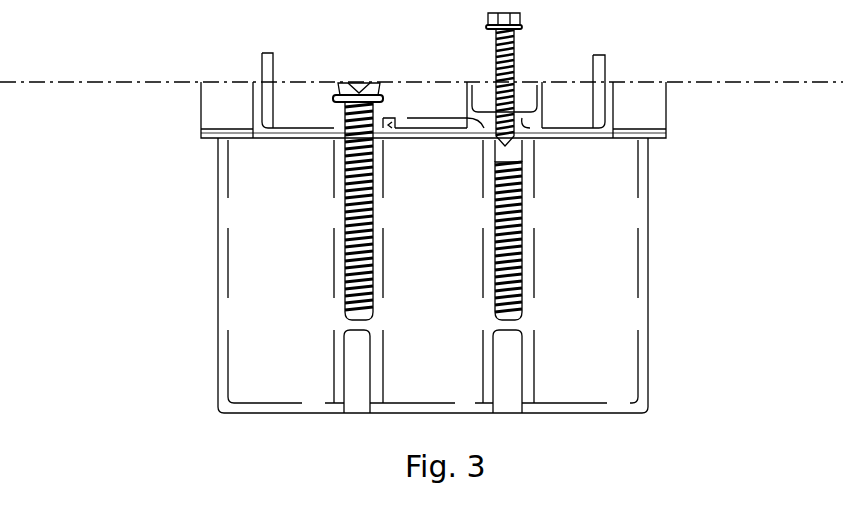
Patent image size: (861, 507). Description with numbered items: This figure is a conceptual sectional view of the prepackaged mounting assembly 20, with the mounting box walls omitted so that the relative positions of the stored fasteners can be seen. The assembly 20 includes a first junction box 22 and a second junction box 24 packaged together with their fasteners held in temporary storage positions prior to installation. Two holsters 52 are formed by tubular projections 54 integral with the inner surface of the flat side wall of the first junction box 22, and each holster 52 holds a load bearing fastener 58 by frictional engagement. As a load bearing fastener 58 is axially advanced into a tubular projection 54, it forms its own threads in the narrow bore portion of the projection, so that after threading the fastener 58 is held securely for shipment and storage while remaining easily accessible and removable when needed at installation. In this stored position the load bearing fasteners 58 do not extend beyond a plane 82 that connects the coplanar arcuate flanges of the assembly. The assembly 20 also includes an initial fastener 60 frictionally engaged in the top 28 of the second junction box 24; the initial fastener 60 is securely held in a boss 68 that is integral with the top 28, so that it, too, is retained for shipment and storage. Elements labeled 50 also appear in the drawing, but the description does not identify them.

The prepackaged mounting assembly 20 is at (158, 248).
The first junction box 22 is at (648, 265).
The second junction box 24 is at (666, 108).
The top 28 is at (666, 133).
The locating tab 50 is at (273, 55).
The holster 52 is at (522, 222).
The tubular projection 54 is at (483, 180).
The load bearing fastener 58 is at (366, 85).
The initial fastener 60 is at (520, 26).
The boss 68 is at (538, 117).
The plane 82 is at (752, 82).